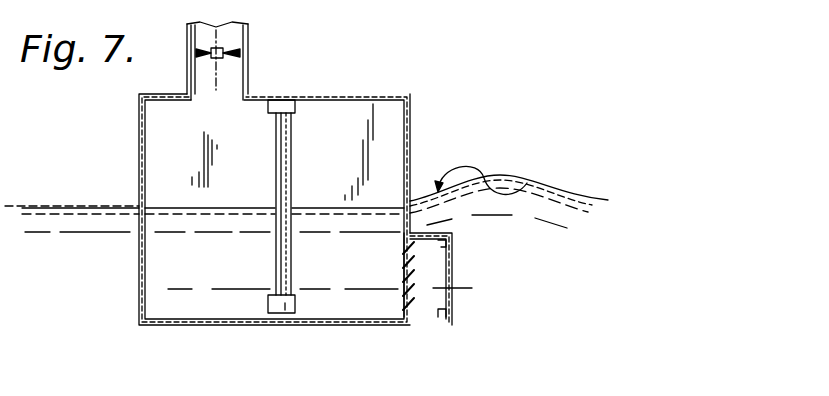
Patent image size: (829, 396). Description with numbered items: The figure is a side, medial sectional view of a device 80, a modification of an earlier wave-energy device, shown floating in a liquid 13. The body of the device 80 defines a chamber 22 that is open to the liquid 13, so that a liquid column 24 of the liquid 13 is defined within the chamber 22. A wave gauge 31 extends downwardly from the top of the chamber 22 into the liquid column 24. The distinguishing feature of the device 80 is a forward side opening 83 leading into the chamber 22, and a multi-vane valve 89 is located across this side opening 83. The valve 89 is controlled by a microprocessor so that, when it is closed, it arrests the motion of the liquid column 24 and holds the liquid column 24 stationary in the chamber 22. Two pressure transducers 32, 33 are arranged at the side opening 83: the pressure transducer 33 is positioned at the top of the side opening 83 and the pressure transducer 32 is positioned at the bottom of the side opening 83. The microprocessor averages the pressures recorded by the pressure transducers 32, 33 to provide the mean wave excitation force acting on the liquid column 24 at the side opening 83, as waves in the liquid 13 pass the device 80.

The device 80 is at (403, 88).
The chamber 22 is at (378, 148).
The liquid 13 is at (100, 232).
The liquid column 24 is at (220, 280).
The wave gauge 31 is at (278, 315).
The pressure transducer 32 is at (455, 310).
The pressure transducer 33 is at (442, 243).
The multi-vane valve 89 is at (403, 288).
The side opening 83 is at (429, 282).